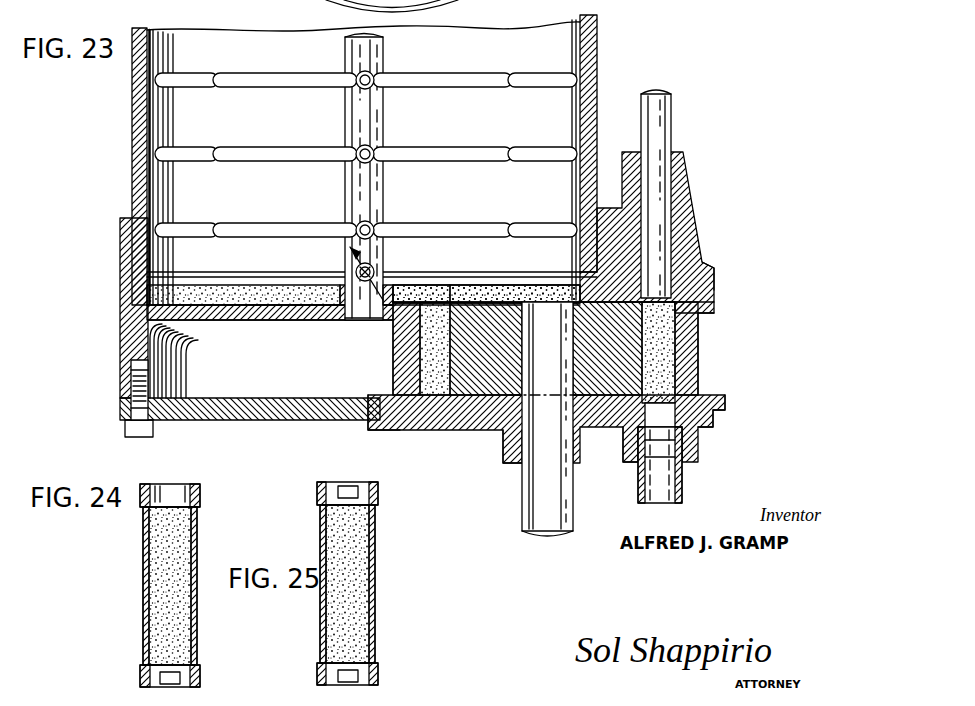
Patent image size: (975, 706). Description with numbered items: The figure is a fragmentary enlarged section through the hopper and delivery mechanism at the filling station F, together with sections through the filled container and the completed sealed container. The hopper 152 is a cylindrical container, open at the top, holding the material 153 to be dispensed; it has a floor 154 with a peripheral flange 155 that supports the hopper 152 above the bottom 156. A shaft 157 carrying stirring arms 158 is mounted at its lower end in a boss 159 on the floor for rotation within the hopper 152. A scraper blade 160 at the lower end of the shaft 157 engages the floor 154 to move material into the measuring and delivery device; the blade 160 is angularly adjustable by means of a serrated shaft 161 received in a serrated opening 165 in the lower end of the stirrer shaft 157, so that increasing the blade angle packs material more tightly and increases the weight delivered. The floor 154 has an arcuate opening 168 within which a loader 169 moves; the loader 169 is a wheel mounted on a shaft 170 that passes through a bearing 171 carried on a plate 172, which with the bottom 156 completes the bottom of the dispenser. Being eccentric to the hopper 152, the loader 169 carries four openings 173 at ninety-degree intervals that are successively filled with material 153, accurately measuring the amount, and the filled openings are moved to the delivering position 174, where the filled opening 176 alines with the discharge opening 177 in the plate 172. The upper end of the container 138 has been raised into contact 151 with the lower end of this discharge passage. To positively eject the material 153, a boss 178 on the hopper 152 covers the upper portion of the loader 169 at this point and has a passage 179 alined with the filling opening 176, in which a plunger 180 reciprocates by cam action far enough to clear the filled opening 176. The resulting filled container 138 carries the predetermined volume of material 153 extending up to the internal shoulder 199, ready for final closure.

In FIG. 23, the hopper 152 is at (598, 40).
In FIG. 23, the stirring arms 158 is at (463, 73).
In FIG. 23, the shaft 157 is at (385, 112).
In FIG. 23, the filling station F is at (133, 186).
In FIG. 23, the material 153 is at (200, 298).
In FIG. 24, the material 153 is at (183, 545).
In FIG. 25, the material 153 is at (362, 537).
In FIG. 23, the floor 154 is at (242, 310).
In FIG. 23, the opening 165 is at (358, 278).
In FIG. 23, the scraper blade 160 is at (357, 266).
In FIG. 23, the shaft 161 is at (384, 263).
In FIG. 23, the boss 159 is at (398, 296).
In FIG. 23, the openings 173 is at (458, 300).
In FIG. 23, the arcuate opening 168 is at (390, 320).
In FIG. 23, the plate 172 is at (420, 425).
In FIG. 23, the loader 169 is at (478, 382).
In FIG. 23, the bearing 171 is at (506, 433).
In FIG. 23, the shaft 170 is at (525, 508).
In FIG. 23, the bottom 156 is at (292, 422).
In FIG. 23, the peripheral flange 155 is at (131, 368).
In FIG. 23, the plunger 180 is at (671, 118).
In FIG. 23, the boss 178 is at (700, 215).
In FIG. 23, the passage 179 is at (708, 278).
In FIG. 23, the delivering position 174 is at (675, 305).
In FIG. 23, the filling opening 176 is at (662, 347).
In FIG. 23, the contact 151 is at (692, 440).
In FIG. 23, the container 138 is at (683, 478).
In FIG. 24, the container 138 is at (144, 617).
In FIG. 23, the discharge opening 177 is at (632, 448).
In FIG. 24, the internal shoulder 199 is at (198, 497).